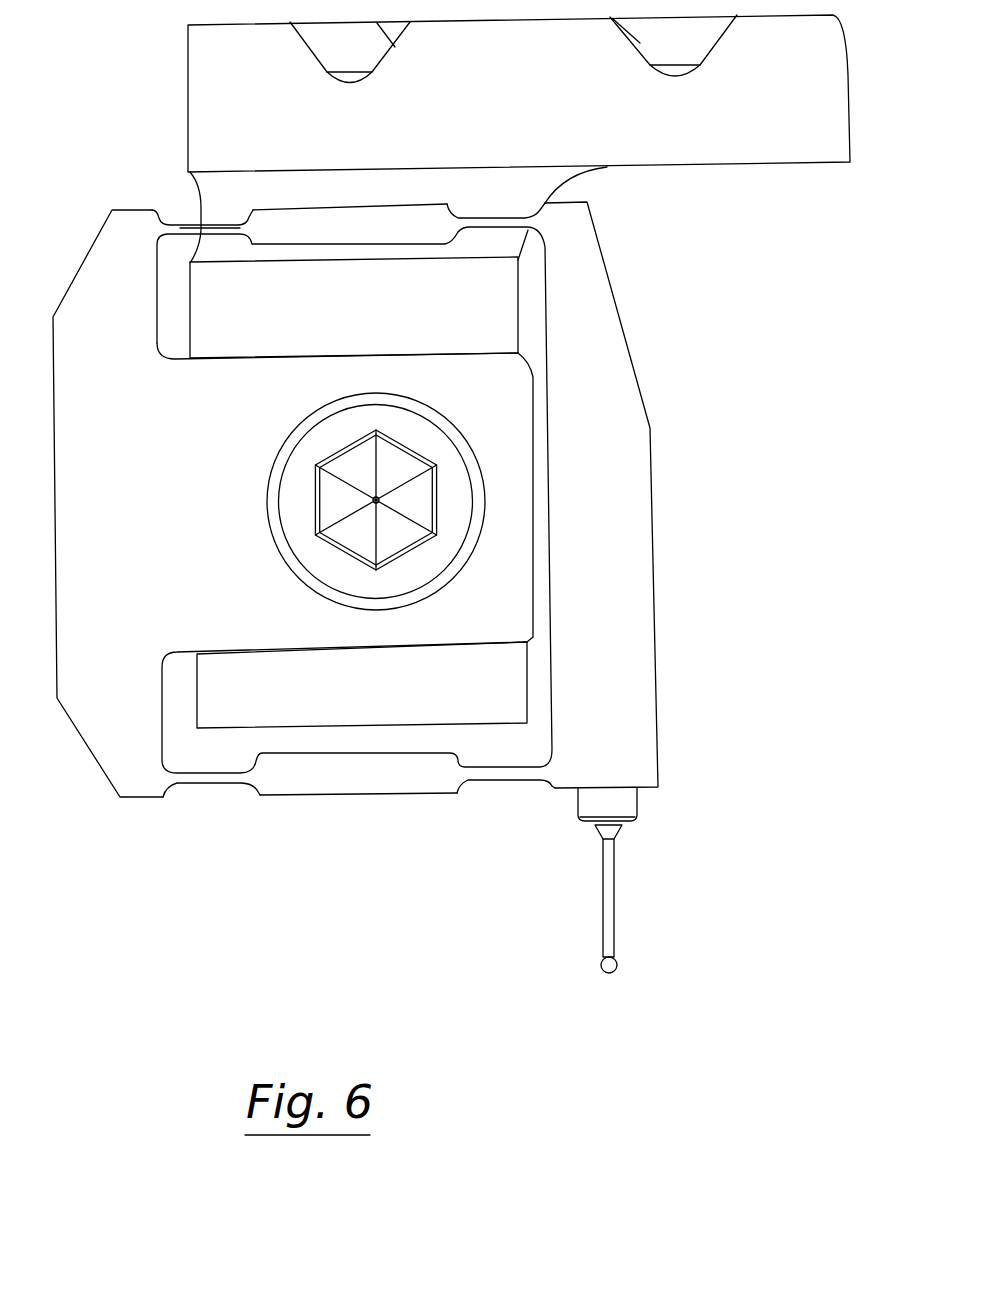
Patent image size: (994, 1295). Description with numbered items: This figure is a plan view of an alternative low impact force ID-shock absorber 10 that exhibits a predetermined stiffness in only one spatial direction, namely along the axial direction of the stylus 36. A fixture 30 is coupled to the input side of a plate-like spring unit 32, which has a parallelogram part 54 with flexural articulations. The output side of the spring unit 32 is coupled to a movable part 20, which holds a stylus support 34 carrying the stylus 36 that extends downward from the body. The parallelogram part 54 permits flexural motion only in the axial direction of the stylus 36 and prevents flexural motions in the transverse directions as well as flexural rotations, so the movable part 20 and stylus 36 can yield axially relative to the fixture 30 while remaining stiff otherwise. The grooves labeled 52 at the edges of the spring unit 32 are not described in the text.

The ID-shock absorber 10 is at (690, 610).
The movable part 20 is at (612, 525).
The fixture 30 is at (519, 139).
The plate-like spring unit 32 is at (503, 413).
The stylus support 34 is at (610, 902).
The stylus 36 is at (617, 963).
The clamping grooves 52 is at (177, 223).
The parallelogram part 54 is at (80, 775).